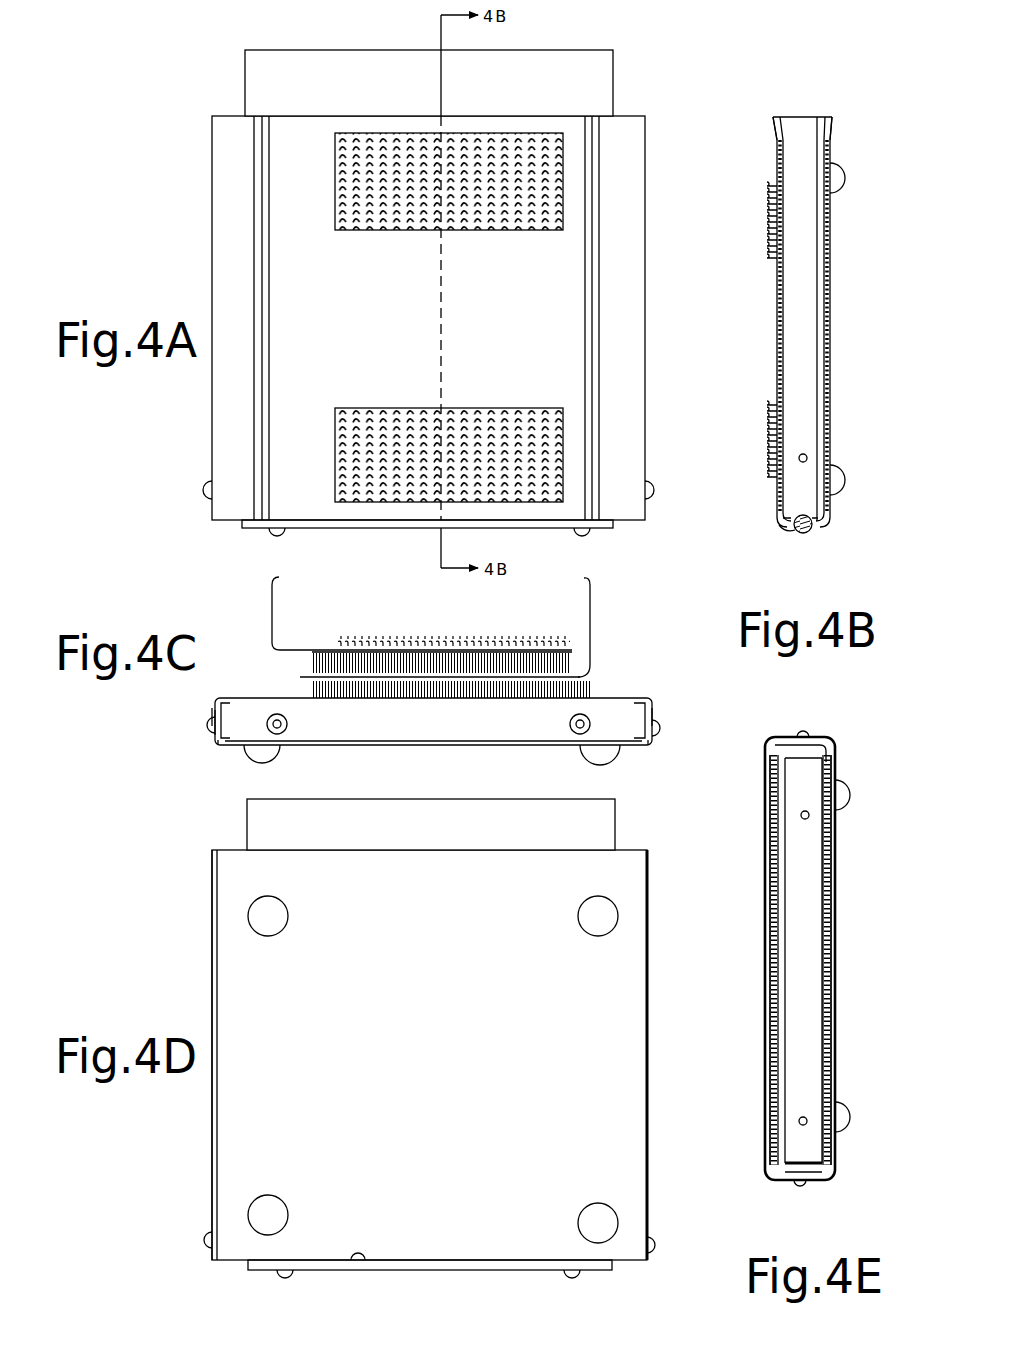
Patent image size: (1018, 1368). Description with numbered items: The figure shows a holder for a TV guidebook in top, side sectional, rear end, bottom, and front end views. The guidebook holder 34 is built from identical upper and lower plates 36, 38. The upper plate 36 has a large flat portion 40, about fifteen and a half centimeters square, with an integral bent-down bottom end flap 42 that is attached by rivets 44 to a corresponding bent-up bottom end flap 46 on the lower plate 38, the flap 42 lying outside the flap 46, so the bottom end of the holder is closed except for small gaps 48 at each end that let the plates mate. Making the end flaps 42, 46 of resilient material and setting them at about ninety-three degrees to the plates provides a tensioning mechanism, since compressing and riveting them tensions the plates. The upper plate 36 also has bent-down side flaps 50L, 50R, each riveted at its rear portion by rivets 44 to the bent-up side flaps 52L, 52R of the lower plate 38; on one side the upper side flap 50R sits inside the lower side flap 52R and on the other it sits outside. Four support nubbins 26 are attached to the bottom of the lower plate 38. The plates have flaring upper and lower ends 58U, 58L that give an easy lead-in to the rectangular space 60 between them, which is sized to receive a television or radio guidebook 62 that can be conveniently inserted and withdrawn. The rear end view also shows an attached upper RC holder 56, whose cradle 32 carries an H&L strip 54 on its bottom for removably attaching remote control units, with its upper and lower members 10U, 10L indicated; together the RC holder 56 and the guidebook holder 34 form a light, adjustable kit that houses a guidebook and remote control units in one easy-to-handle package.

In FIG. 4C, the upper member 10U is at (284, 606).
In FIG. 4C, the lower member 10L is at (580, 607).
In FIG. 4B, the support nubbins 26 is at (845, 474).
In FIG. 4C, the support nubbins 26 is at (602, 763).
In FIG. 4D, the support nubbins 26 is at (250, 908).
In FIG. 4E, the support nubbins 26 is at (845, 798).
In FIG. 4C, the RC holder cradle 32 is at (578, 672).
In FIG. 4C, the guidebook holder 34 is at (198, 726).
In FIG. 4B, the upper plate 36 is at (773, 292).
In FIG. 4C, the upper plate 36 is at (214, 704).
In FIG. 4E, the upper plate 36 is at (767, 991).
In FIG. 4B, the lower plate 38 is at (830, 305).
In FIG. 4C, the lower plate 38 is at (365, 746).
In FIG. 4D, the lower plate 38 is at (236, 1136).
In FIG. 4E, the lower plate 38 is at (835, 1051).
In FIG. 4A, the flat portion 40 is at (232, 240).
In FIG. 4A, the bottom end flap 42 is at (372, 530).
In FIG. 4B, the bottom end flap 42 is at (780, 530).
In FIG. 4C, the bottom end flap 42 is at (470, 727).
In FIG. 4D, the bottom end flap 42 is at (453, 1272).
In FIG. 4A, the rivets 44 is at (203, 494).
In FIG. 4B, the rivets 44 is at (830, 507).
In FIG. 4C, the rivets 44 is at (282, 735).
In FIG. 4D, the rivets 44 is at (205, 1240).
In FIG. 4E, the rivets 44 is at (804, 731).
In FIG. 4B, the bottom end flap 46 is at (818, 528).
In FIG. 4D, the bottom end flap 46 is at (362, 1262).
In FIG. 4C, the gaps 48 is at (226, 707).
In FIG. 4D, the gaps 48 is at (232, 1265).
In FIG. 4C, the left side flap 50L is at (211, 708).
In FIG. 4E, the left side flap 50L is at (776, 743).
In FIG. 4C, the right side flap 50R is at (652, 714).
In FIG. 4D, the right side flap 50R is at (212, 980).
In FIG. 4C, the left side flap 52L is at (218, 746).
In FIG. 4E, the left side flap 52L is at (826, 736).
In FIG. 4C, the right side flap 52R is at (655, 748).
In FIG. 4E, the right side flap 52R is at (823, 1180).
In FIG. 4A, the H&L strip 54 is at (553, 152).
In FIG. 4B, the H&L strip 54 is at (765, 214).
In FIG. 4C, the H&L strip 54 is at (592, 700).
In FIG. 4C, the RC holder 56 is at (252, 605).
In FIG. 4B, the flaring upper end 58U is at (773, 126).
In FIG. 4E, the flaring upper end 58U is at (768, 881).
In FIG. 4B, the flaring lower end 58L is at (835, 125).
In FIG. 4E, the flaring lower end 58L is at (828, 986).
In FIG. 4B, the space 60 is at (812, 236).
In FIG. 4E, the space 60 is at (812, 910).
In FIG. 4A, the guidebook 62 is at (543, 54).
In FIG. 4D, the guidebook 62 is at (612, 824).